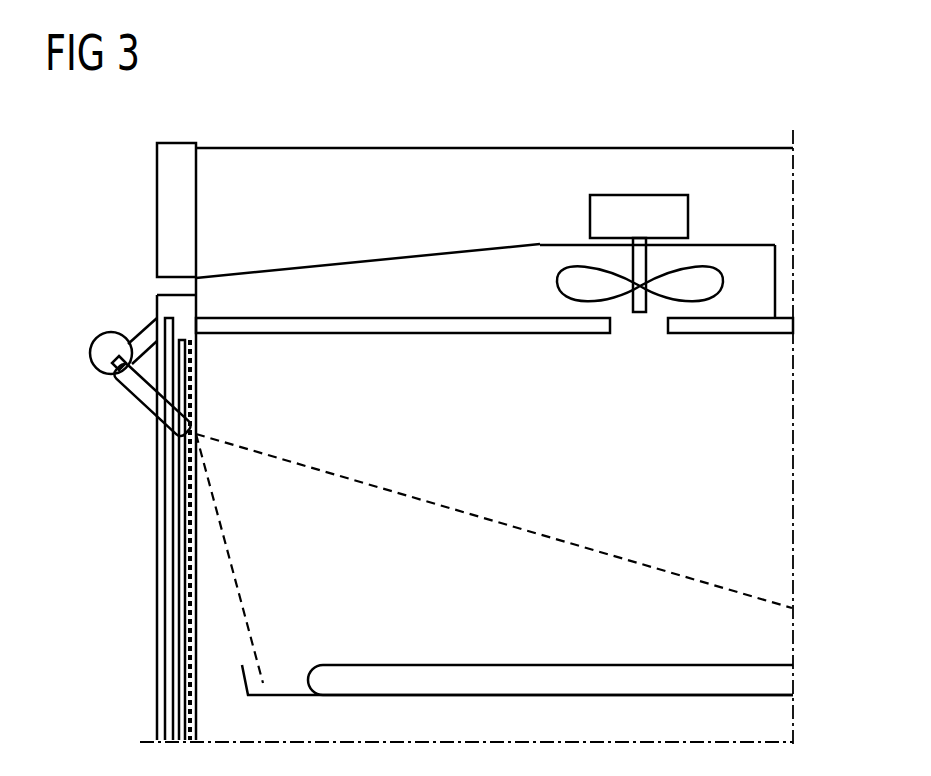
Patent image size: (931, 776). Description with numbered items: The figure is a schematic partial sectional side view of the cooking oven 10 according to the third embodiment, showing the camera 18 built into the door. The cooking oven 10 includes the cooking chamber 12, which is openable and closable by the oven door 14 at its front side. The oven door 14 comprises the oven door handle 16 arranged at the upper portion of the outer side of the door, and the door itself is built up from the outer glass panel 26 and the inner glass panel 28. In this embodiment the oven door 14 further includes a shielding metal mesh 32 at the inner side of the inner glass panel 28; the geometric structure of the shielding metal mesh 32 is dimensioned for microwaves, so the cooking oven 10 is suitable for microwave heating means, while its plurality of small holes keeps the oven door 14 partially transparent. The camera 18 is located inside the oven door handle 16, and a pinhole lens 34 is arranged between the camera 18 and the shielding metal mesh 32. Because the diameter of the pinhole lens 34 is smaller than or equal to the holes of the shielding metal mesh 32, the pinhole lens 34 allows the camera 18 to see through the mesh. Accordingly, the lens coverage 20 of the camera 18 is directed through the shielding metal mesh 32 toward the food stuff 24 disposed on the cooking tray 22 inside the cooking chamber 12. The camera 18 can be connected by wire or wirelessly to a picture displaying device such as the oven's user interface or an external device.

The cooking oven 10 is at (676, 102).
The cooking chamber 12 is at (592, 478).
The oven door 14 is at (157, 690).
The oven door handle 16 is at (95, 337).
The camera 18 is at (112, 362).
The lens coverage 20 is at (275, 458).
The cooking tray 22 is at (285, 695).
The food stuff 24 is at (563, 680).
The outer glass panel 26 is at (165, 550).
The inner glass panel 28 is at (183, 620).
The shielding metal mesh 32 is at (190, 490).
The pinhole lens 34 is at (143, 392).